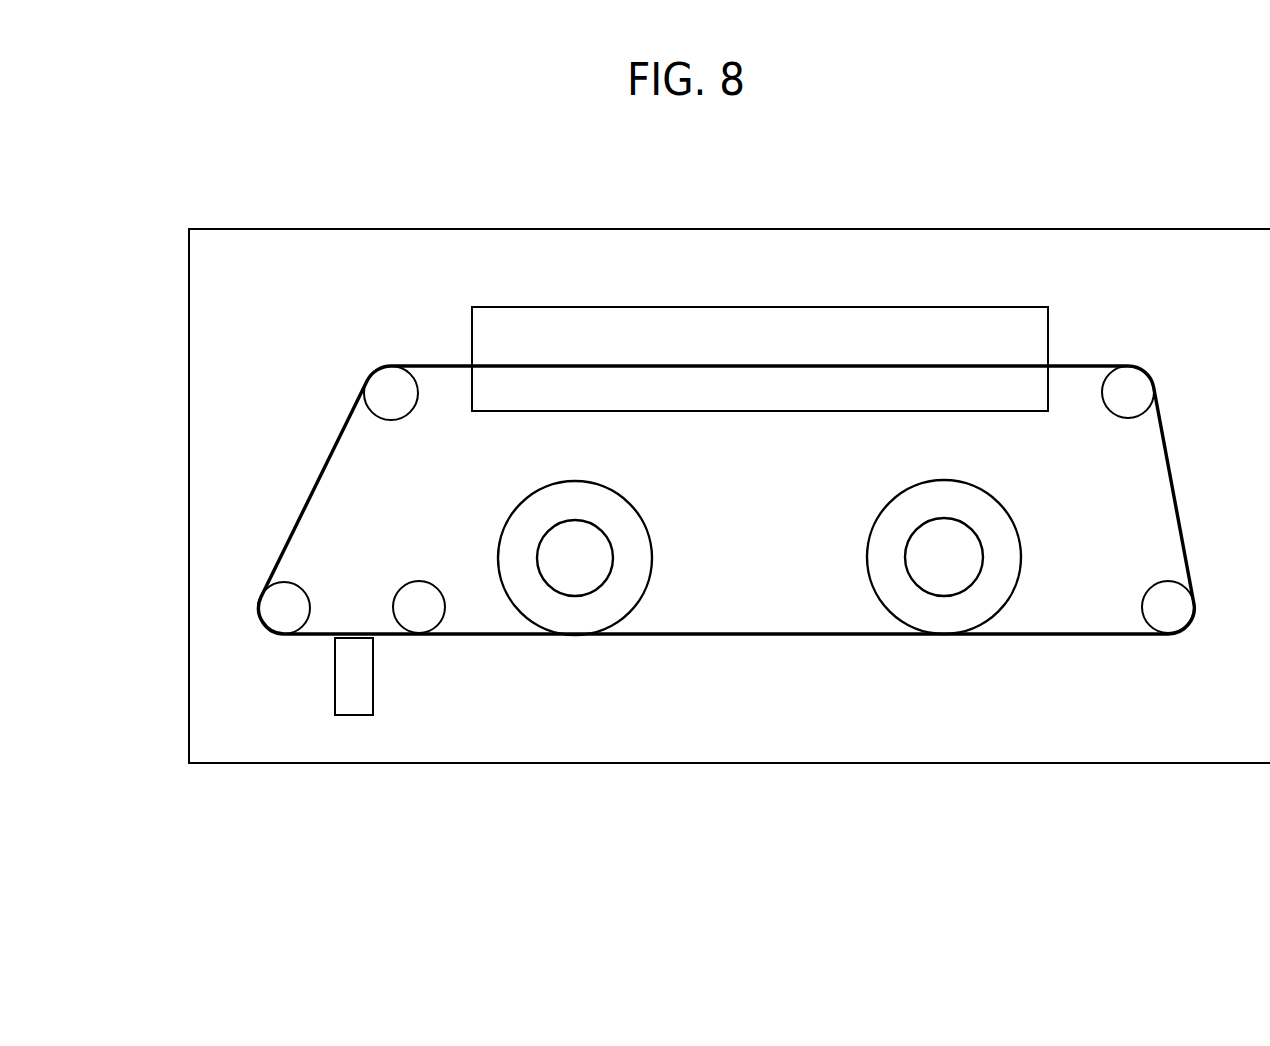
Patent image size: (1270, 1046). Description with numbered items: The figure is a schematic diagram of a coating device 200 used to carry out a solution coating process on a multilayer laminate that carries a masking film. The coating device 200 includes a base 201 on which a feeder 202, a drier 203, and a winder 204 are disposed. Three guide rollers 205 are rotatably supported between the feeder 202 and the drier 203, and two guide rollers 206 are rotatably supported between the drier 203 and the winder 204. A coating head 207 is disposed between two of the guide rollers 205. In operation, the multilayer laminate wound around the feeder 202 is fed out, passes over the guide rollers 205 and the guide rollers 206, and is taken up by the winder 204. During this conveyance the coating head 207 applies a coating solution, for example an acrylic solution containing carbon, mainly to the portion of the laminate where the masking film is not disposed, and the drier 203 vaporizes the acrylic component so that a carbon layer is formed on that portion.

The coating device 200 is at (1143, 170).
The base 201 is at (632, 245).
The feeder 202 is at (615, 606).
The drier 203 is at (875, 307).
The winder 204 is at (894, 602).
The guide rollers 205 is at (410, 417).
The guide rollers 206 is at (1122, 410).
The coating head 207 is at (335, 685).